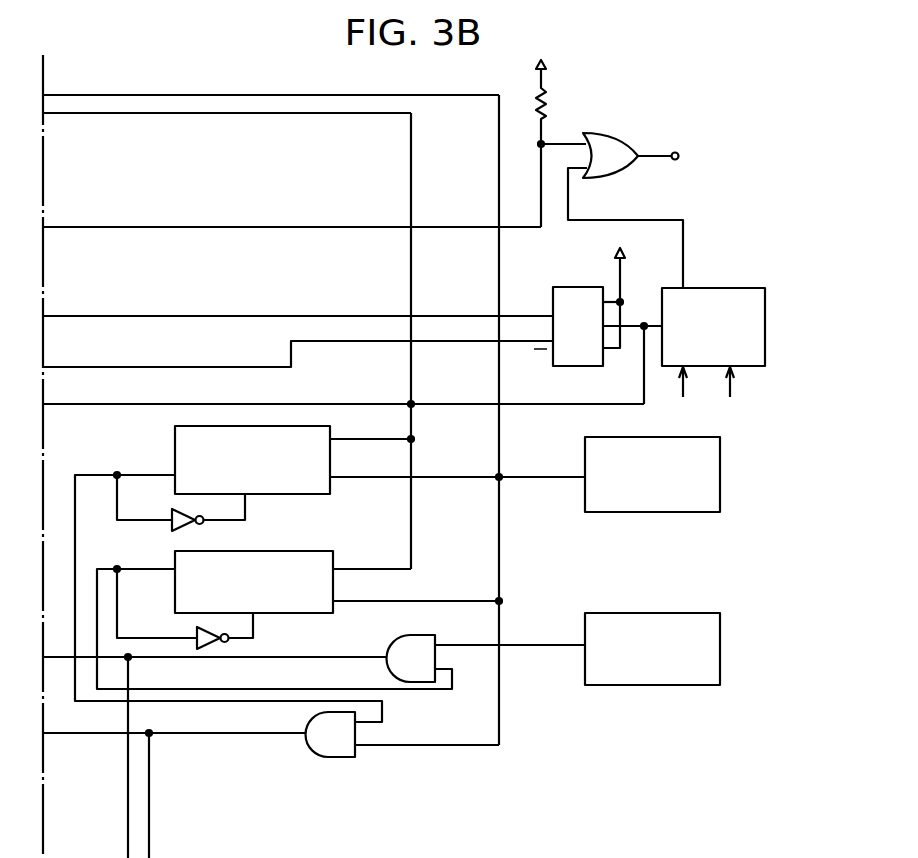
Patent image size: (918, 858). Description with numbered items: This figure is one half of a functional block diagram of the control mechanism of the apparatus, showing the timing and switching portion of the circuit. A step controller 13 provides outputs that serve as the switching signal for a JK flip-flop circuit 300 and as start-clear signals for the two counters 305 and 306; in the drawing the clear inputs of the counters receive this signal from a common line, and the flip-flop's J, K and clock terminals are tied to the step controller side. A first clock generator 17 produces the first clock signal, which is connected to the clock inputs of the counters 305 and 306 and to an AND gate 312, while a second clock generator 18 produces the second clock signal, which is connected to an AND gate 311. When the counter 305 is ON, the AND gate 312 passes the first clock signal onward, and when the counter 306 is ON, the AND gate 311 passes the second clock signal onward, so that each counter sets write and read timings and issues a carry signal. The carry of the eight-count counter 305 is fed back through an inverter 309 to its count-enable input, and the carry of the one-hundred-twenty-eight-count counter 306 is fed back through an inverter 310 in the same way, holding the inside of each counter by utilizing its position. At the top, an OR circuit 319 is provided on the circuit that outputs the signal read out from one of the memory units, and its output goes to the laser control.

The OR circuit 319 is at (607, 134).
The JK flip-flop circuit 300 is at (586, 287).
The step controller 13 is at (722, 288).
The counter 305 is at (178, 428).
The inverter 309 is at (178, 510).
The counter 306 is at (331, 550).
The inverter 310 is at (196, 631).
The AND gate 311 is at (430, 638).
The AND gate 312 is at (312, 753).
The first clock generator 17 is at (722, 466).
The second clock generator 18 is at (722, 639).